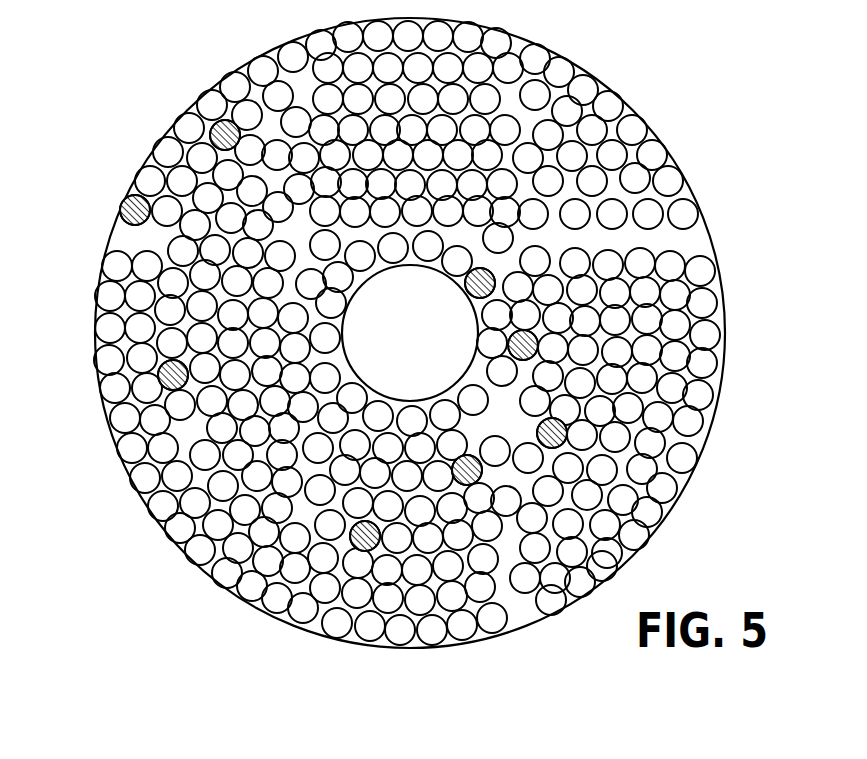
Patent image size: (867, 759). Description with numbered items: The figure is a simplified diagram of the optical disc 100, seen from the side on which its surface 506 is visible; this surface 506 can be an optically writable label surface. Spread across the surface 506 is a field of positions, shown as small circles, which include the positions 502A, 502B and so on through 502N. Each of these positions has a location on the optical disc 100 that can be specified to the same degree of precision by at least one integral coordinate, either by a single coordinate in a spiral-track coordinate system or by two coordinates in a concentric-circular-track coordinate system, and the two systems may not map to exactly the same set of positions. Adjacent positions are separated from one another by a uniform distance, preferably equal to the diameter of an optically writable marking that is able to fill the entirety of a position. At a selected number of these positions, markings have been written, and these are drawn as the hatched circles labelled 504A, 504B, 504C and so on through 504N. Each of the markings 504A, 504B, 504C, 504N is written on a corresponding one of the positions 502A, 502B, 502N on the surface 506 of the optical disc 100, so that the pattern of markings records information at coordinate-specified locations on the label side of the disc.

The optical disc 100 is at (80, 522).
The position 502A is at (420, 264).
The position 502B is at (455, 278).
The position 502N is at (407, 327).
The marking 504A is at (538, 335).
The marking 504B is at (480, 480).
The marking 504C is at (358, 547).
The marking 504N is at (173, 358).
The surface 506 is at (123, 470).